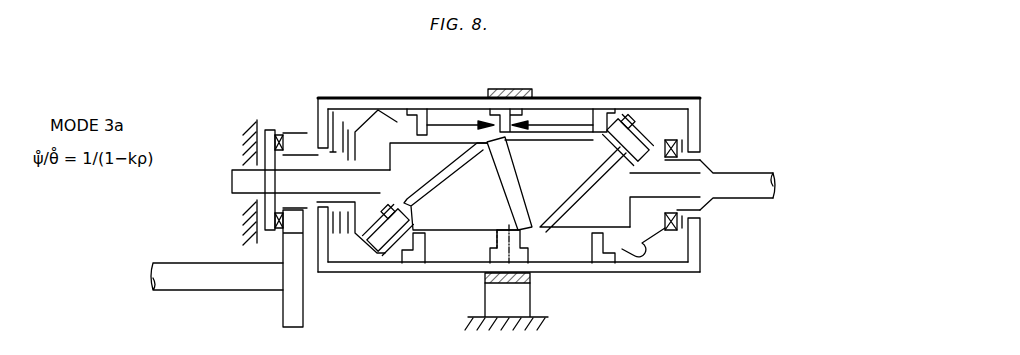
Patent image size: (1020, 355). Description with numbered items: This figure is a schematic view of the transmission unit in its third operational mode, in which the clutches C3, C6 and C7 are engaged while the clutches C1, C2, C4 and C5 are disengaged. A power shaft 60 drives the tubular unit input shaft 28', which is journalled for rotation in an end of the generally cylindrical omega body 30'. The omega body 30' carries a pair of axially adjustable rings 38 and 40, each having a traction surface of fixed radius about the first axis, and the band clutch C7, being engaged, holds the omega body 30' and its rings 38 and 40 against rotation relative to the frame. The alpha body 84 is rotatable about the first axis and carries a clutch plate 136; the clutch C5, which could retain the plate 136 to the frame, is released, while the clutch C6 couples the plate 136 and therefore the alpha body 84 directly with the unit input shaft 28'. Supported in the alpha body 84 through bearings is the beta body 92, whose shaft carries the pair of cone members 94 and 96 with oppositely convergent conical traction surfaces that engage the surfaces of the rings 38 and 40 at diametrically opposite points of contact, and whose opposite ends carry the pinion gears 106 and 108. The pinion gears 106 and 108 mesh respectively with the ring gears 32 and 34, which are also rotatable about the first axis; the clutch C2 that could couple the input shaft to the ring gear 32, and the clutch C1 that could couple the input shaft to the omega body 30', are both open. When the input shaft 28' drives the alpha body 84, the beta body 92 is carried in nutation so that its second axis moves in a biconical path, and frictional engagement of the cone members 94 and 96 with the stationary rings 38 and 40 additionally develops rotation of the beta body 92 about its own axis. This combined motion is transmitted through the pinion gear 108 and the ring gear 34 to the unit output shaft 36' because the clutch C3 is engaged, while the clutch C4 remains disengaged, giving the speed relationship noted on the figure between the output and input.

The omega body 30' is at (509, 165).
The band clutch C7 is at (515, 88).
The clutch C5 is at (258, 128).
The clutch plate 136 is at (270, 130).
The clutch C6 is at (280, 130).
The clutch C1 is at (333, 110).
The clutch C2 is at (352, 137).
The ring gear 32 is at (380, 120).
The axially adjustable ring 38 is at (418, 97).
The axially adjustable ring 40 is at (596, 132).
The beta body 92 is at (478, 214).
The cone member 94 is at (473, 203).
The alpha body 84 is at (438, 156).
The cone member 96 is at (563, 186).
The pinion gear 106 is at (392, 200).
The pinion gear 108 is at (627, 160).
The clutch C3 is at (670, 140).
The clutch C4 is at (683, 143).
The ring gear 34 is at (648, 250).
The unit output shaft 36' is at (712, 194).
The unit input shaft 28' is at (321, 267).
The power shaft 60 is at (217, 267).